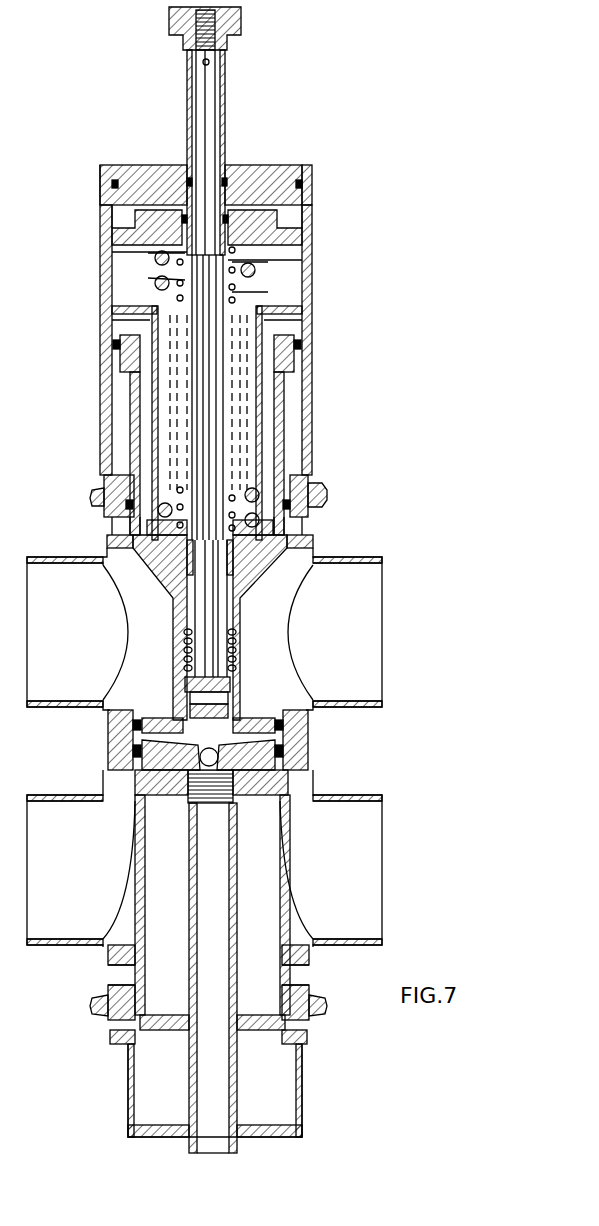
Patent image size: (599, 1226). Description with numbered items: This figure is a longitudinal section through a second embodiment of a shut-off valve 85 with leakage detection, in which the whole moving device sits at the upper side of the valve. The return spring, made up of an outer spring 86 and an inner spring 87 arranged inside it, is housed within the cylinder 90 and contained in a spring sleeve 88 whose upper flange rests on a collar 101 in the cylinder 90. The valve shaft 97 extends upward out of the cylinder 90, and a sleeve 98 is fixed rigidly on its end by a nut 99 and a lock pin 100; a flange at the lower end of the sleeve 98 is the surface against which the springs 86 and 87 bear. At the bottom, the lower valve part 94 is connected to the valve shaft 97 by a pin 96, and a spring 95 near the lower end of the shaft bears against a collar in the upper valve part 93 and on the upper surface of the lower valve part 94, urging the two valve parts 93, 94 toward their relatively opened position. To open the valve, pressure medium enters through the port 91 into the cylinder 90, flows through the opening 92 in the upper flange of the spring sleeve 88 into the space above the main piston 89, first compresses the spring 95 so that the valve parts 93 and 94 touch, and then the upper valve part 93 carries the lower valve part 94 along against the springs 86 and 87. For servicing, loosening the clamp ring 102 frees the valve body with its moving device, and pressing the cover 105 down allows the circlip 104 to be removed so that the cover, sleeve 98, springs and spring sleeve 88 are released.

The shut-off valve 85 is at (326, 232).
The spring 86 is at (257, 268).
The spring 87 is at (240, 285).
The spring sleeve 88 is at (258, 453).
The main piston 89 is at (282, 422).
The cylinder 90 is at (313, 383).
The port 91 is at (307, 267).
The opening 92 is at (141, 306).
The upper valve part 93 is at (258, 722).
The lower valve part 94 is at (257, 783).
The spring 95 is at (243, 638).
The pin 96 is at (108, 716).
The valve shaft 97 is at (203, 587).
The sleeve 98 is at (226, 103).
The nut 99 is at (234, 22).
The lock pin 100 is at (204, 63).
The collar 101 is at (122, 320).
The clamp ring 102 is at (323, 503).
The circlip 104 is at (300, 165).
The cover 105 is at (254, 175).